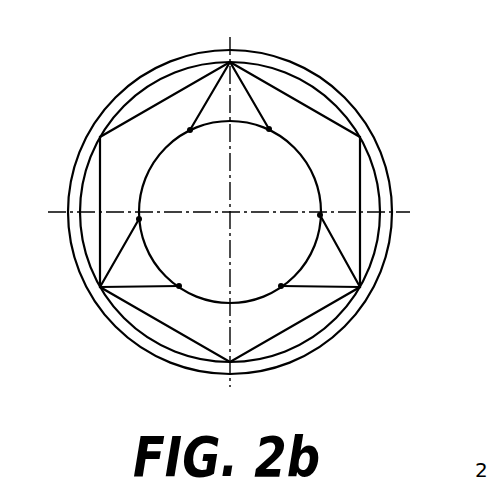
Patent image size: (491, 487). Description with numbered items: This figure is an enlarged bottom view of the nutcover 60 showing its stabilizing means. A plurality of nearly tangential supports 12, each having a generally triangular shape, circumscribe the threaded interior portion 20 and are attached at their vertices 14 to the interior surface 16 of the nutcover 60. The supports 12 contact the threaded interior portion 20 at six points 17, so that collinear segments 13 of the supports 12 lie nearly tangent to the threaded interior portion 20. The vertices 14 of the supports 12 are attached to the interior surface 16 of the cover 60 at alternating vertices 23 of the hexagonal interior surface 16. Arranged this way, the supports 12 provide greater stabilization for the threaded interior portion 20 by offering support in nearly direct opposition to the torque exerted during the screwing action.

The support 12 is at (207, 103).
The collinear segment 13 is at (158, 288).
The vertex 14 is at (230, 61).
The interior surface 16 is at (360, 183).
The contact point 17 is at (313, 108).
The threaded interior portion 20 is at (312, 238).
The alternating vertex 23 is at (101, 137).
The nutcover 60 is at (318, 70).